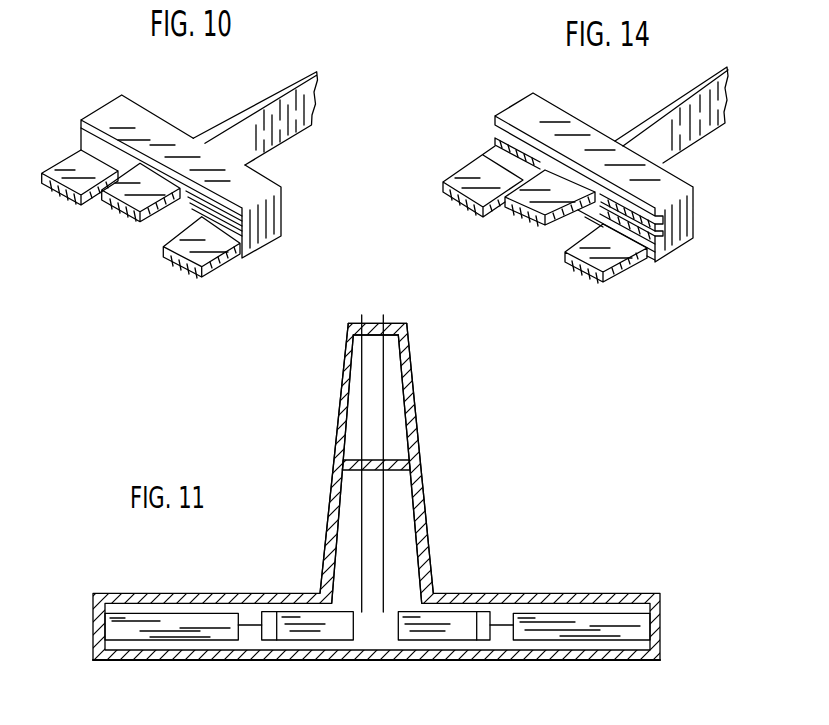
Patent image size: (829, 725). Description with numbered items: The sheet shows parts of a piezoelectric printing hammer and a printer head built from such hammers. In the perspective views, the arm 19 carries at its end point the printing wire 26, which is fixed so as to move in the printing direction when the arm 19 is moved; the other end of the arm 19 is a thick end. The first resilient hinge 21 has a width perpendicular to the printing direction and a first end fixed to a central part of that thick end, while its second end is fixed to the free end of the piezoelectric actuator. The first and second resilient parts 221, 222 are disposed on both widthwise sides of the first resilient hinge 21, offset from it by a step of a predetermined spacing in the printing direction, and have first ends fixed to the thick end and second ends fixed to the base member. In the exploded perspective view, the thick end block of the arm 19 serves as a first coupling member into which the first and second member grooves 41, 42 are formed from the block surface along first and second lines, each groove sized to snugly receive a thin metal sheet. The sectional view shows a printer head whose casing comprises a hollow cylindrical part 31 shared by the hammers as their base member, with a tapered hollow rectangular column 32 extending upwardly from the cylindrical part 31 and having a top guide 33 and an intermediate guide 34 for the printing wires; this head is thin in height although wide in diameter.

In FIG. 10, the arm 19 is at (291, 127).
In FIG. 14, the arm 19 is at (657, 128).
In FIG. 10, the first resilient hinge 21 is at (138, 191).
In FIG. 14, the first resilient hinge 21 is at (537, 193).
In FIG. 11, the printing wire 26 is at (397, 590).
In FIG. 11, the hollow cylindrical part 31 is at (555, 593).
In FIG. 11, the tapered hollow rectangular column 32 is at (420, 438).
In FIG. 11, the top guide 33 is at (397, 323).
In FIG. 11, the intermediate guide 34 is at (382, 471).
In FIG. 14, the first member groove 41 is at (495, 139).
In FIG. 14, the second member groove 42 is at (583, 212).
In FIG. 10, the first resilient part 221 is at (75, 175).
In FIG. 14, the first resilient part 221 is at (473, 187).
In FIG. 10, the second resilient part 222 is at (200, 250).
In FIG. 14, the second resilient part 222 is at (600, 257).